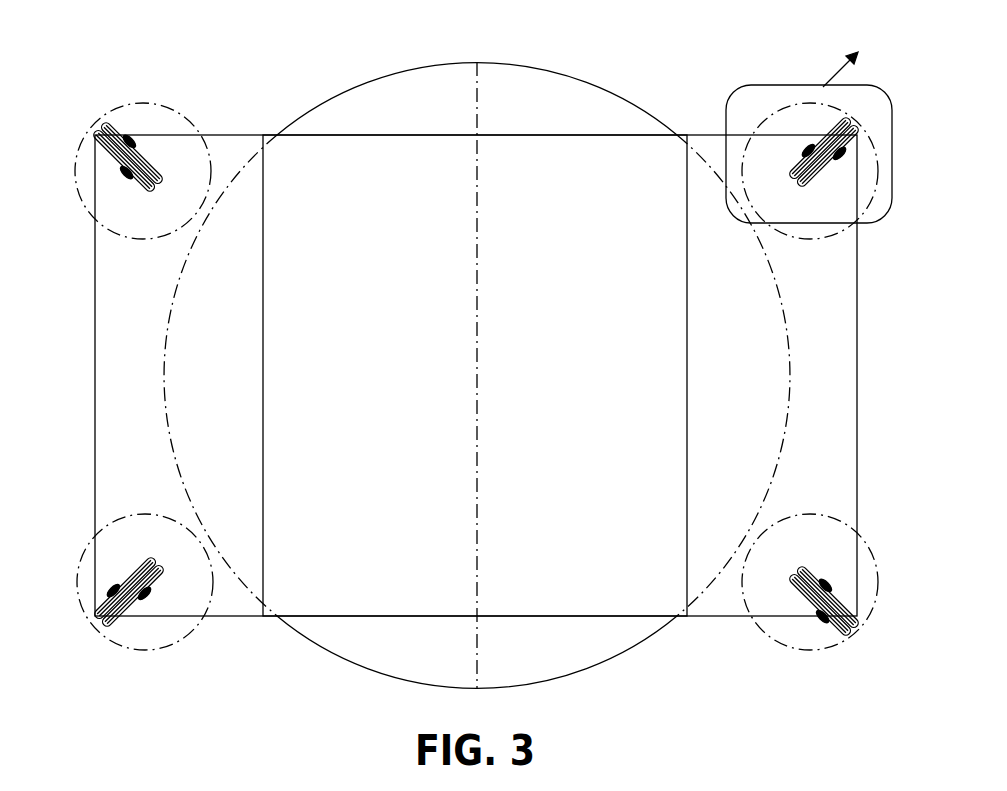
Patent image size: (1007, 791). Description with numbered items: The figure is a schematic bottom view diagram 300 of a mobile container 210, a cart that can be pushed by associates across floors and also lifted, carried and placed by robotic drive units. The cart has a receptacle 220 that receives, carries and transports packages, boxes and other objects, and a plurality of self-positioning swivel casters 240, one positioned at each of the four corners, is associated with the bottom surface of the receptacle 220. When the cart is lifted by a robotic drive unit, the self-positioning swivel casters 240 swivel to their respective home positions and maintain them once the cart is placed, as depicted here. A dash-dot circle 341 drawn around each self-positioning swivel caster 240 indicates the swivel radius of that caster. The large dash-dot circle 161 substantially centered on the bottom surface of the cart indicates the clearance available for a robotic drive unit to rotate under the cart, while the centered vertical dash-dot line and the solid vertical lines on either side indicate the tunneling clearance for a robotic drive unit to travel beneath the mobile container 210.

The bottom view diagram 300 is at (172, 55).
The mobile container 210 is at (94, 374).
The receptacle 220 is at (154, 286).
The dash-dot circle 161 is at (593, 86).
The self-positioning swivel caster 240 is at (118, 123).
The dash-dot circle 341 is at (183, 113).